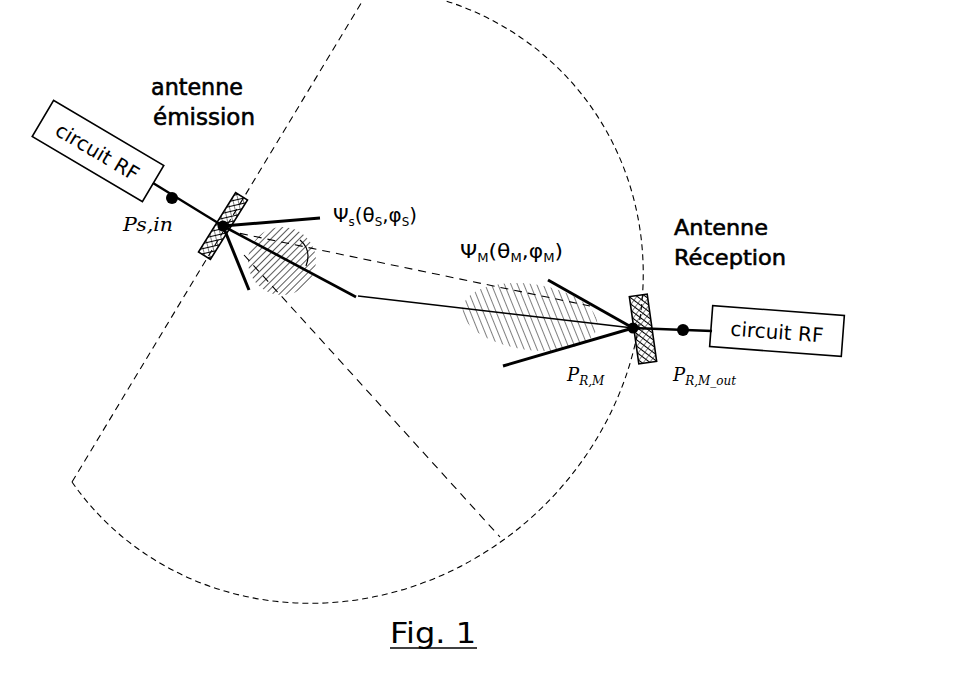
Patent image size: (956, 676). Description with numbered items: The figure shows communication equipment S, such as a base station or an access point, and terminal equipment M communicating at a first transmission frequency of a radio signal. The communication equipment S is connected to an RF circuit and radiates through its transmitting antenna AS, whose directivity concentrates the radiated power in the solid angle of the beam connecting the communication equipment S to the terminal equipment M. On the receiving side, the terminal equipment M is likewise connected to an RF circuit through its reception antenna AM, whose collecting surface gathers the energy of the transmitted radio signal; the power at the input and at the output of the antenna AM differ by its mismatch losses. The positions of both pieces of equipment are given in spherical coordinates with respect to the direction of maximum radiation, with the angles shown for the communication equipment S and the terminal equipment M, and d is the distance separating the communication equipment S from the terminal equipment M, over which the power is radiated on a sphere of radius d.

The communication equipment S is at (237, 225).
The terminal equipment M is at (631, 317).
The antenna of the communication equipment AS is at (235, 275).
The antenna of the terminal equipment AM is at (529, 363).
The distance d is at (372, 396).